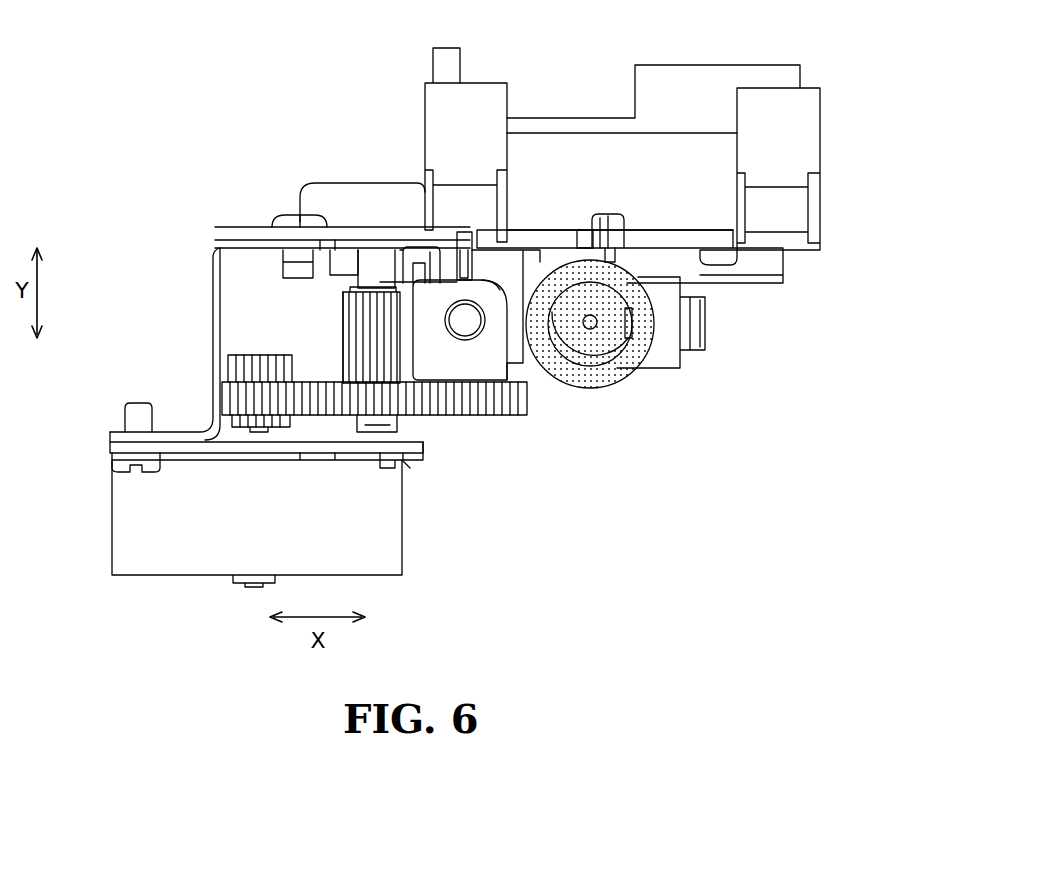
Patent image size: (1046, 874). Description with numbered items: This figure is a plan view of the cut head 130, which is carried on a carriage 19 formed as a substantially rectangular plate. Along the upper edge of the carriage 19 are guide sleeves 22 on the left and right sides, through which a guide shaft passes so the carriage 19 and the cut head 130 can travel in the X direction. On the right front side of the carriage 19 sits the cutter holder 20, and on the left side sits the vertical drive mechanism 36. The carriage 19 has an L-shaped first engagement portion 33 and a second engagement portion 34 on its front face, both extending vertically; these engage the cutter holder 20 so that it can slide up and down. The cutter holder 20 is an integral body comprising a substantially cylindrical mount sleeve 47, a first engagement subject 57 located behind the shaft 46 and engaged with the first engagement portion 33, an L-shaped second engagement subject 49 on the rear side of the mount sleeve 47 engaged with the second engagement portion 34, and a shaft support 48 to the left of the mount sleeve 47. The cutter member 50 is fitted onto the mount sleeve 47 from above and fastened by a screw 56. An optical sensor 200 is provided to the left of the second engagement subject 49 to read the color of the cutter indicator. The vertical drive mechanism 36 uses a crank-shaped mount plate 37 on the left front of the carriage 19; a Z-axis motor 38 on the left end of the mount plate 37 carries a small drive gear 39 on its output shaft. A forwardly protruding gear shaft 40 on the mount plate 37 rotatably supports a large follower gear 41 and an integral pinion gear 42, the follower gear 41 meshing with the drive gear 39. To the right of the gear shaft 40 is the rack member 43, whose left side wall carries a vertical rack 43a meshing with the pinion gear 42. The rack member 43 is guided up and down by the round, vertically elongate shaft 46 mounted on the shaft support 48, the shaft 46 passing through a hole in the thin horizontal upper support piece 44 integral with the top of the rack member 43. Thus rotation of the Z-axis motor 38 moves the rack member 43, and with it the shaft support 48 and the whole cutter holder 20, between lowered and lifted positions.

The cut head 130 is at (216, 151).
The carriage 19 is at (423, 258).
The cutter holder 20 is at (610, 377).
The guide sleeve 22 is at (492, 95).
The first engagement portion 33 is at (472, 278).
The second engagement portion 34 is at (600, 215).
The vertical drive mechanism 36 is at (427, 490).
The mount plate 37 is at (207, 272).
The Z-axis motor 38 is at (160, 557).
The drive gear 39 is at (230, 363).
The gear shaft 40 is at (373, 267).
The follower gear 41 is at (448, 421).
The pinion gear 42 is at (347, 332).
The rack member 43 is at (435, 245).
The rack 43a is at (345, 310).
The upper support piece 44 is at (460, 375).
The shaft 46 is at (463, 327).
The mount sleeve 47 is at (630, 377).
The shaft support 48 is at (495, 290).
The second engagement subject 49 is at (606, 214).
The cutter member 50 is at (555, 365).
The screw 56 is at (705, 335).
The first engagement subject 57 is at (465, 232).
The optical sensor 200 is at (583, 232).